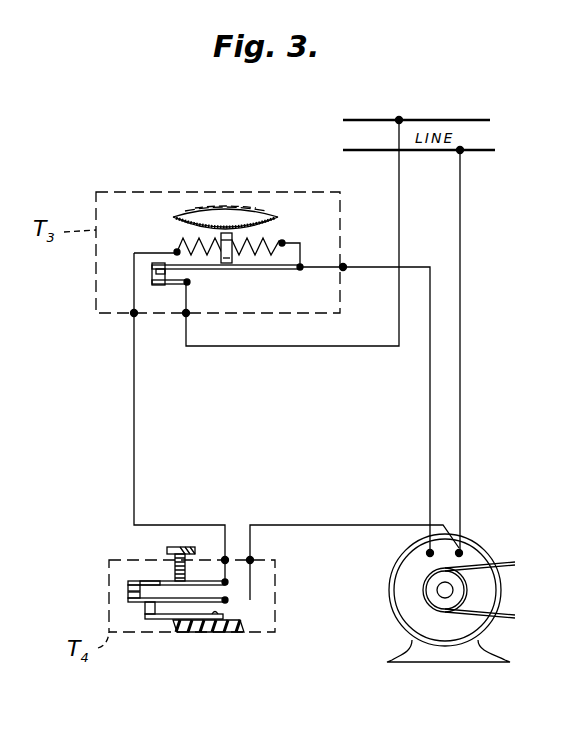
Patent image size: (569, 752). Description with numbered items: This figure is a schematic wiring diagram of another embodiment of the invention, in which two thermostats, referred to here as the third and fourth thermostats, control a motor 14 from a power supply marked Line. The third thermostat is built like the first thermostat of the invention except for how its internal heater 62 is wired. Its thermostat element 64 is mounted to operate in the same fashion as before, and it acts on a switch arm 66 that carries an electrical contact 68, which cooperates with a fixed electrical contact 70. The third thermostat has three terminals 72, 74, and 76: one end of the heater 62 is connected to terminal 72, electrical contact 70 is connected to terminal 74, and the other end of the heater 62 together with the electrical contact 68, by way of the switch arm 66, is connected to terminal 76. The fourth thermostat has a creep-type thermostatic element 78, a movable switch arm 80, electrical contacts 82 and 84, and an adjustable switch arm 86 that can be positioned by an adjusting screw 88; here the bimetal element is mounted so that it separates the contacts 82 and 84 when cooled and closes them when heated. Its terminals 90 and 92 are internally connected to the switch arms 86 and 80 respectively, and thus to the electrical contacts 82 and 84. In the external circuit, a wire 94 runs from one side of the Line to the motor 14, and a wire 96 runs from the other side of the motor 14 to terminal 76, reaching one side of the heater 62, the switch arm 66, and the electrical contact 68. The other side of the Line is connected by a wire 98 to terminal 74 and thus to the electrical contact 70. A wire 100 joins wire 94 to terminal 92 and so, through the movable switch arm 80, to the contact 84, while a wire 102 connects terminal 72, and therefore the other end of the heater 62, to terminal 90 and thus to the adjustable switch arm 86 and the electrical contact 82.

The motor 14 is at (400, 592).
The internal heater 62 is at (282, 243).
The thermostat element 64 is at (180, 218).
The switch arm 66 is at (262, 269).
The electrical contact 68 is at (152, 268).
The electrical contact 70 is at (152, 282).
The terminal 72 is at (131, 322).
The terminal 74 is at (185, 322).
The terminal 76 is at (345, 266).
The creep-type thermostatic element 78 is at (172, 622).
The movable switch arm 80 is at (147, 610).
The electrical contact 82 is at (128, 583).
The electrical contact 84 is at (128, 600).
The adjustable switch arm 86 is at (153, 580).
The adjusting screw 88 is at (167, 550).
The terminal 90 is at (225, 560).
The terminal 92 is at (250, 560).
The wire 94 is at (462, 396).
The wire 96 is at (429, 393).
The wire 98 is at (399, 180).
The wire 100 is at (332, 528).
The wire 102 is at (134, 420).